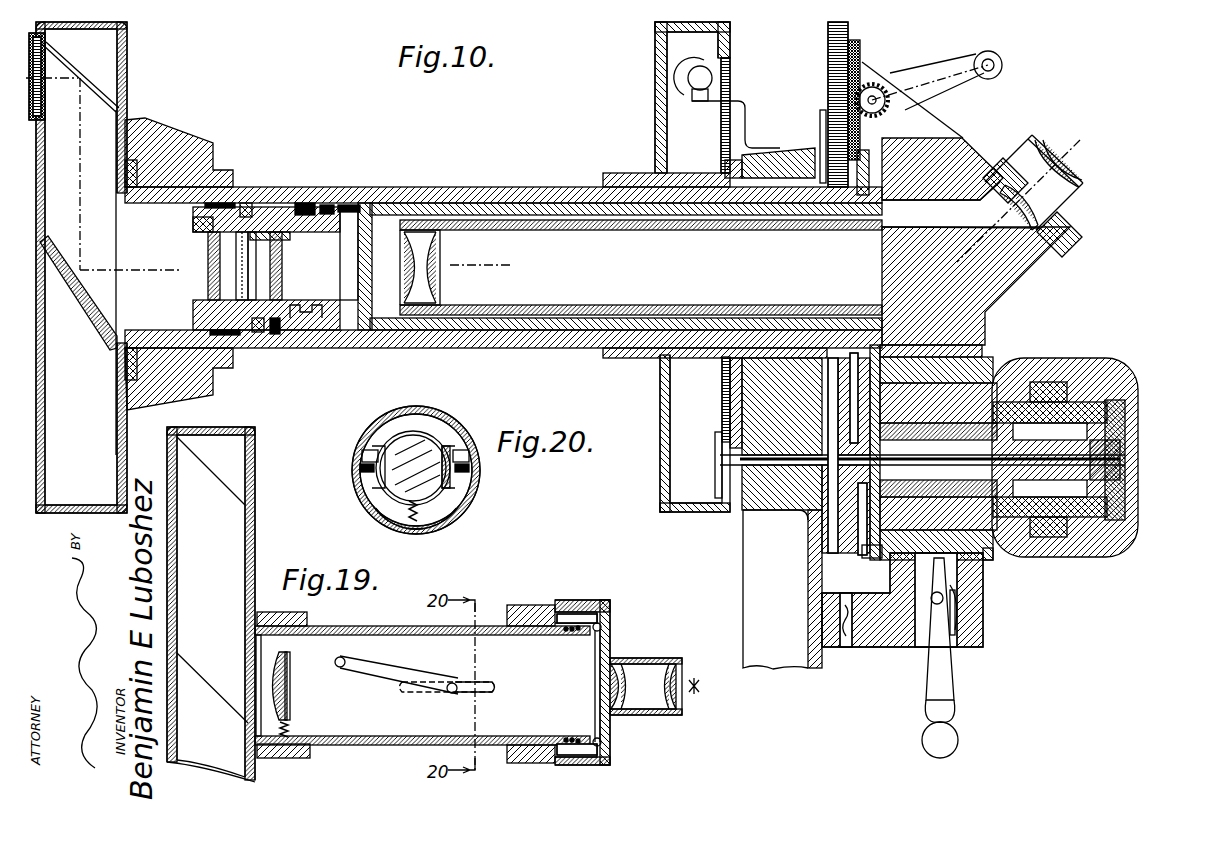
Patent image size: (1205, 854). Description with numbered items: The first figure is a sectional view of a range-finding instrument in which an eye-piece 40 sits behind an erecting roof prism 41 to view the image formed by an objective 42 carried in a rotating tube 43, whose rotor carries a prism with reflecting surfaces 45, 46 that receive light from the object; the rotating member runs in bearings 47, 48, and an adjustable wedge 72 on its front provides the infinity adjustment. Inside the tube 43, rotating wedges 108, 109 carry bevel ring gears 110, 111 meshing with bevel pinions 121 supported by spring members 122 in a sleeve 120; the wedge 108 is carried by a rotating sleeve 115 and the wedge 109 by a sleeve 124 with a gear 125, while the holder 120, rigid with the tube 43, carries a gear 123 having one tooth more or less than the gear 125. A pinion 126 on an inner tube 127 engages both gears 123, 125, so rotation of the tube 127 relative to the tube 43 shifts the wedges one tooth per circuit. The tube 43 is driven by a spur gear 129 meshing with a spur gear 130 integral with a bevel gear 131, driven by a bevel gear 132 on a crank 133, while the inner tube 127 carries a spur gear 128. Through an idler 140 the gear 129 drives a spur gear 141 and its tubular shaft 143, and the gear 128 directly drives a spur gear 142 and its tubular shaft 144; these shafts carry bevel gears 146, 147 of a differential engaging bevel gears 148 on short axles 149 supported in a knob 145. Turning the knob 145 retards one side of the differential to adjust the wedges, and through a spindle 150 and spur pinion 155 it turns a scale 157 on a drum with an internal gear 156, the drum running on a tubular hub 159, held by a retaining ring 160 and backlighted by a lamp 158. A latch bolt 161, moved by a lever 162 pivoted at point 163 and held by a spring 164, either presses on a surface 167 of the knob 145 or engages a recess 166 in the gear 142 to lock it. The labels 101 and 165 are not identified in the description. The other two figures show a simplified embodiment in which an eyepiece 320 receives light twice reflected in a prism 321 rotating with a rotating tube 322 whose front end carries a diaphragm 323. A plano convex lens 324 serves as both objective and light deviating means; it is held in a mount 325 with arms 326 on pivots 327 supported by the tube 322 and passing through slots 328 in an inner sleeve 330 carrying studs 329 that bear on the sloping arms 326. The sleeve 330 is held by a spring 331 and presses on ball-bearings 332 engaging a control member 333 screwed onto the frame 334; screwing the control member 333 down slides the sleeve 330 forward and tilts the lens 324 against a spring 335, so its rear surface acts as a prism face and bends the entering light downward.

In FIG. 10, the eye-piece 40 is at (1068, 170).
In FIG. 10, the erecting roof prism 41 is at (971, 203).
In FIG. 10, the objective 42 is at (425, 262).
In FIG. 10, the tube 43 is at (515, 188).
In FIG. 10, the reflecting surface 45 is at (68, 258).
In FIG. 10, the reflecting surface 46 is at (92, 97).
In FIG. 10, the bearing 47 is at (175, 183).
In FIG. 10, the bearing 48 is at (782, 162).
In FIG. 10, the adjustable wedge 72 is at (46, 63).
In FIG. 10, the inner lens tube 101 is at (605, 306).
In FIG. 10, the rotating wedge 108 is at (208, 244).
In FIG. 10, the rotating wedge 109 is at (282, 246).
In FIG. 10, the bevel ring gear 110 is at (236, 272).
In FIG. 10, the bevel ring gear 111 is at (256, 282).
In FIG. 10, the rotating sleeve 115 is at (195, 218).
In FIG. 10, the sleeve 120 is at (276, 212).
In FIG. 10, the bevel pinions 121 is at (258, 205).
In FIG. 10, the spring members 122 is at (228, 203).
In FIG. 10, the gear 123 is at (318, 348).
In FIG. 10, the sleeve 124 is at (288, 348).
In FIG. 10, the gear 125 is at (340, 350).
In FIG. 10, the pinion 126 is at (320, 205).
In FIG. 10, the inner tube 127 is at (368, 205).
In FIG. 10, the spur gear 128 is at (862, 175).
In FIG. 10, the spur gear 129 is at (823, 170).
In FIG. 10, the spur gear 130 is at (832, 32).
In FIG. 10, the bevel gear 131 is at (856, 60).
In FIG. 10, the bevel gear 132 is at (876, 90).
In FIG. 10, the crank 133 is at (1000, 60).
In FIG. 10, the idler 140 is at (830, 370).
In FIG. 10, the spur gear 141 is at (848, 560).
In FIG. 10, the spur gear 142 is at (846, 472).
In FIG. 10, the tubular shaft 143 is at (1125, 468).
In FIG. 10, the tubular shaft 144 is at (850, 480).
In FIG. 10, the knob 145 is at (1128, 528).
In FIG. 10, the bevel gear 146 is at (1128, 388).
In FIG. 10, the bevel gear 147 is at (998, 376).
In FIG. 10, the bevel gears 148 is at (1070, 402).
In FIG. 10, the short axles 149 is at (1050, 380).
In FIG. 10, the spindle 150 is at (1122, 448).
In FIG. 10, the spur pinion 155 is at (722, 445).
In FIG. 10, the internal gear 156 is at (730, 66).
In FIG. 10, the scale 157 is at (728, 92).
In FIG. 10, the lamp 158 is at (704, 68).
In FIG. 10, the tubular hub 159 is at (650, 182).
In FIG. 10, the retaining ring 160 is at (603, 355).
In FIG. 10, the latch bolt 161 is at (987, 582).
In FIG. 10, the lever 162 is at (943, 692).
In FIG. 10, the pivot point 163 is at (925, 640).
In FIG. 10, the spring 164 is at (987, 628).
In FIG. 10, the spring 165 is at (987, 612).
In FIG. 10, the recess 166 is at (883, 558).
In FIG. 10, the surface 167 is at (993, 558).
In FIG. 19, the eyepiece 320 is at (646, 657).
In FIG. 19, the prism 321 is at (211, 604).
In FIG. 19, the rotating tube 322 is at (393, 614).
In FIG. 20, the rotating tube 322 is at (472, 504).
In FIG. 19, the diaphragm 323 is at (262, 641).
In FIG. 19, the lens 324 is at (284, 678).
In FIG. 19, the mount 325 is at (290, 710).
In FIG. 20, the mount 325 is at (435, 438).
In FIG. 19, the arms 326 is at (410, 677).
In FIG. 20, the arms 326 is at (362, 460).
In FIG. 19, the pivots 327 is at (450, 694).
In FIG. 20, the pivots 327 is at (358, 472).
In FIG. 19, the slots 328 is at (482, 688).
In FIG. 20, the slots 328 is at (472, 486).
In FIG. 19, the studs 329 is at (346, 664).
In FIG. 20, the studs 329 is at (375, 443).
In FIG. 19, the inner sleeve 330 is at (520, 735).
In FIG. 20, the inner sleeve 330 is at (455, 520).
In FIG. 19, the spring 331 is at (570, 736).
In FIG. 19, the ball-bearings 332 is at (603, 742).
In FIG. 19, the control member 333 is at (565, 758).
In FIG. 19, the frame 334 is at (525, 605).
In FIG. 19, the spring 335 is at (288, 729).